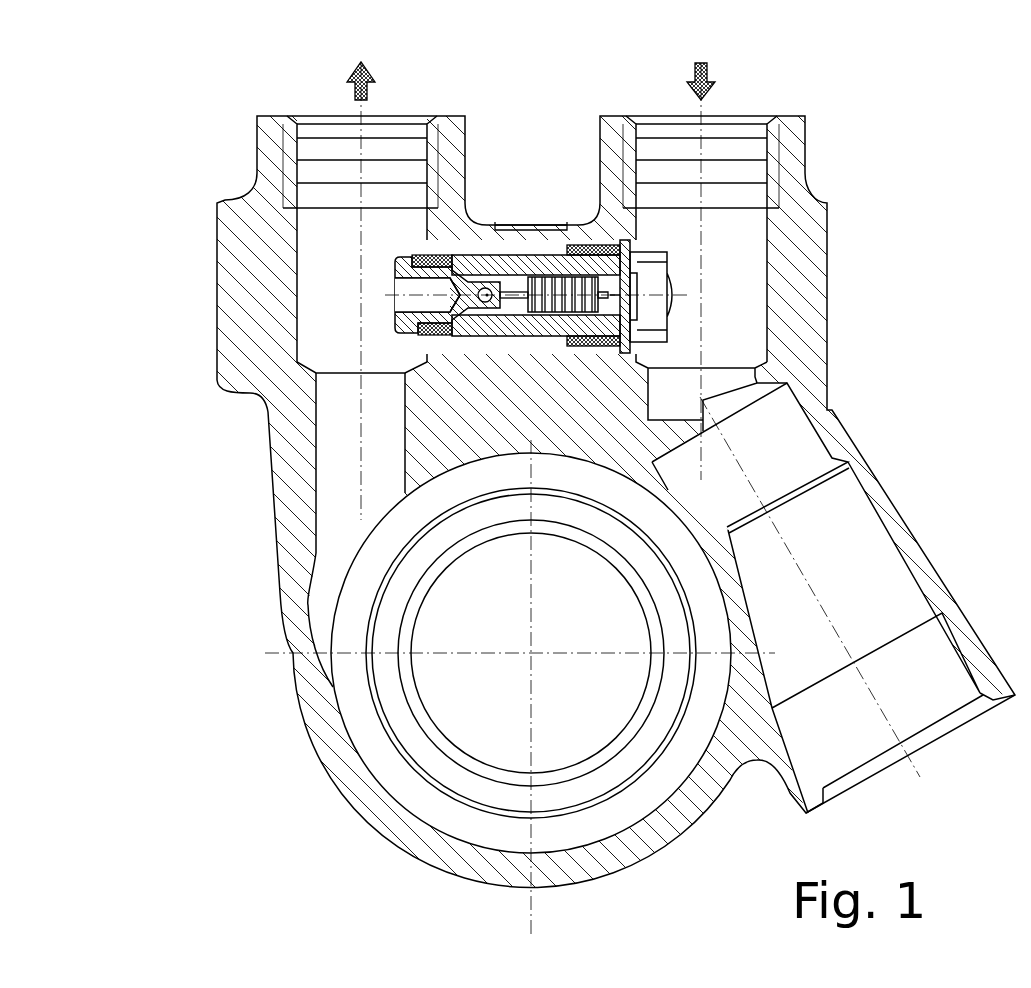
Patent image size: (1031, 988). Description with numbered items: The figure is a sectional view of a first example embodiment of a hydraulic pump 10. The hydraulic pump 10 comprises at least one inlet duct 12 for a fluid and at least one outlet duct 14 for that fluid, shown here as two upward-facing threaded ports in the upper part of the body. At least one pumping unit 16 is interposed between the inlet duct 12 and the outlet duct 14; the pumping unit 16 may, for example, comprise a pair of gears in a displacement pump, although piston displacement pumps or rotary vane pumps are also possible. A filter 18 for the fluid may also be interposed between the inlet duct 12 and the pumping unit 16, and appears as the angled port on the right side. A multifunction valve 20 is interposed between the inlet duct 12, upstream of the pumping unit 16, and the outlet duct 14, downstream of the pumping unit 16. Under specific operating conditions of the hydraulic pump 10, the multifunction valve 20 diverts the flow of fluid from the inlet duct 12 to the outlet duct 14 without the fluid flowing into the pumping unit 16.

The hydraulic pump 10 is at (222, 573).
The inlet duct 12 is at (770, 117).
The outlet duct 14 is at (402, 117).
The pumping unit 16 is at (463, 757).
The filter 18 is at (887, 600).
The multifunction valve 20 is at (507, 257).